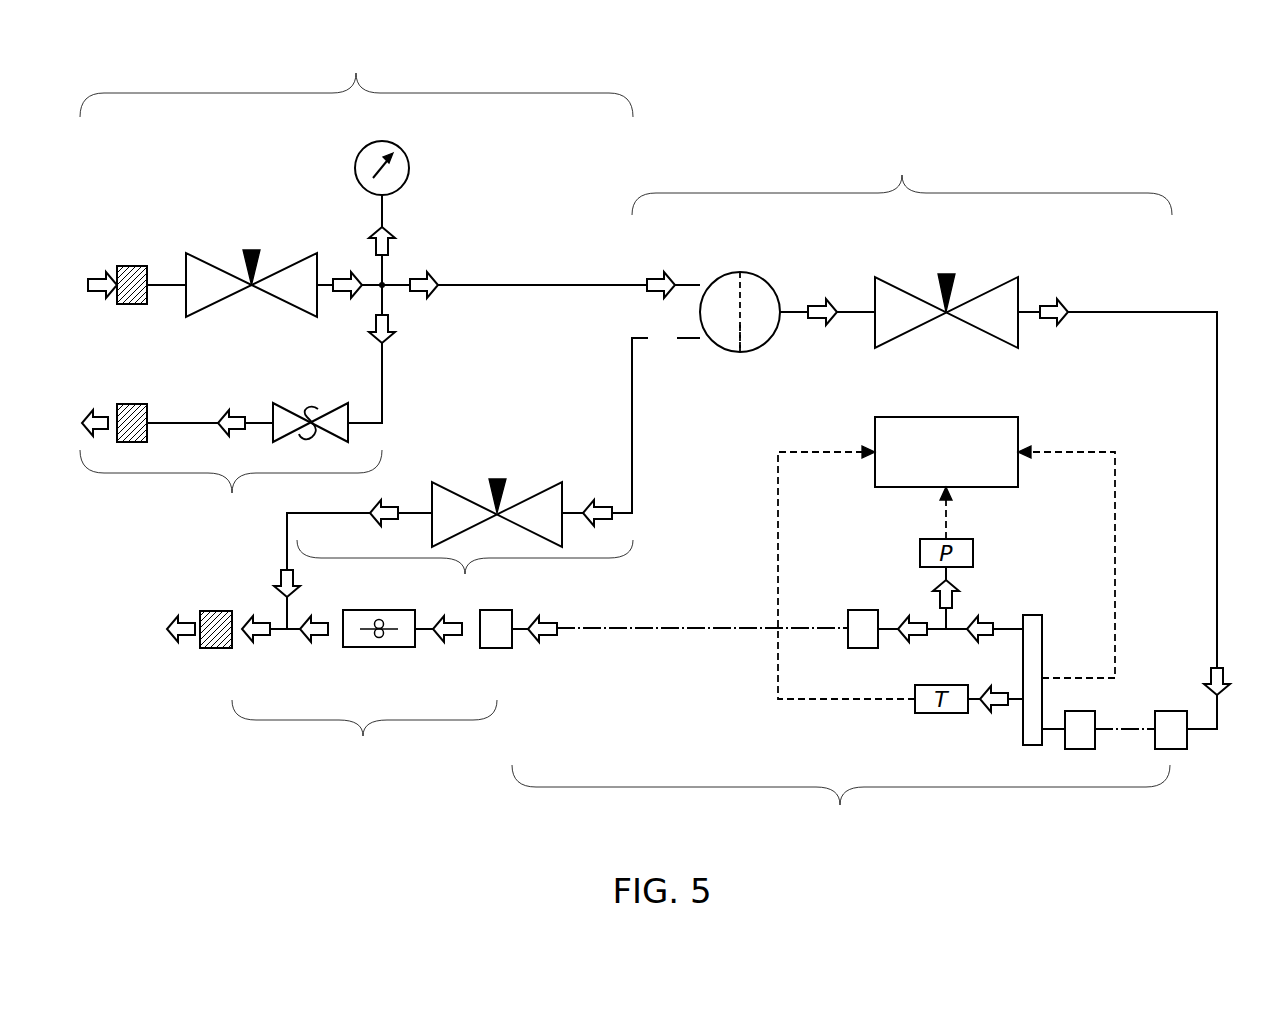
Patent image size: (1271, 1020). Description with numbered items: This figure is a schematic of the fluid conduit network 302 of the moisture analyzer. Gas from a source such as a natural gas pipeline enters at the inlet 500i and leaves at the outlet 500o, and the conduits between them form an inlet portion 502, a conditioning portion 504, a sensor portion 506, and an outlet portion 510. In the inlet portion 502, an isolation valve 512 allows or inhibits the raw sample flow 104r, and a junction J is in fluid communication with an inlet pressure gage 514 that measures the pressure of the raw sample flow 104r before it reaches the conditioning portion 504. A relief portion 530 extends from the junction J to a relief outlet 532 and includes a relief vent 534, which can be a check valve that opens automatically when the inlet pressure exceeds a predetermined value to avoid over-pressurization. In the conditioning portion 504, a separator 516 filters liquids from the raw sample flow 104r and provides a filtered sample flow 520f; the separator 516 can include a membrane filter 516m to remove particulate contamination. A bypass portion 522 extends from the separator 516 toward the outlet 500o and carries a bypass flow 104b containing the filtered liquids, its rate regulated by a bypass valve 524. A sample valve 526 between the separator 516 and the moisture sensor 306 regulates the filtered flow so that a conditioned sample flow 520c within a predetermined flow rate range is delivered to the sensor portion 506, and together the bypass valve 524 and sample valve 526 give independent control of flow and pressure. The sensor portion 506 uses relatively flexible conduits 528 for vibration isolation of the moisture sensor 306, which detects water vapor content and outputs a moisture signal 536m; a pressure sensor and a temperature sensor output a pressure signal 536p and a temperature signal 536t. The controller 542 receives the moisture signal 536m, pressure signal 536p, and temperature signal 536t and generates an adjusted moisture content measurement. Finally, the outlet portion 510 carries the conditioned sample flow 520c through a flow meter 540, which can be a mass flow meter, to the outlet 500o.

The fluid conduit network 302 is at (1143, 100).
The inlet portion 502 is at (356, 81).
The conditioning portion 504 is at (902, 180).
The sensor portion 506 is at (841, 796).
The outlet portion 510 is at (364, 729).
The isolation valve 512 is at (284, 264).
The inlet pressure gage 514 is at (409, 165).
The separator 516 is at (722, 276).
The membrane filter 516m is at (745, 340).
The filtered sample flow 520f is at (793, 312).
The conditioned sample flow 520c is at (1133, 312).
The bypass portion 522 is at (465, 569).
The bypass valve 524 is at (533, 492).
The sample valve 526 is at (988, 292).
The flexible conduits 528 is at (668, 632).
The relief portion 530 is at (231, 484).
The relief outlet 532 is at (133, 404).
The relief vent 534 is at (325, 412).
The temperature signal 536t is at (822, 452).
The moisture signal 536m is at (1080, 452).
The pressure signal 536p is at (950, 515).
The flow meter 540 is at (378, 648).
The controller 542 is at (946, 452).
The inlet 500i is at (133, 266).
The outlet 500o is at (213, 611).
The raw sample flow 104r is at (162, 285).
The bypass flow 104b is at (632, 380).
The moisture sensor 306 is at (1023, 735).
The junction J is at (384, 284).